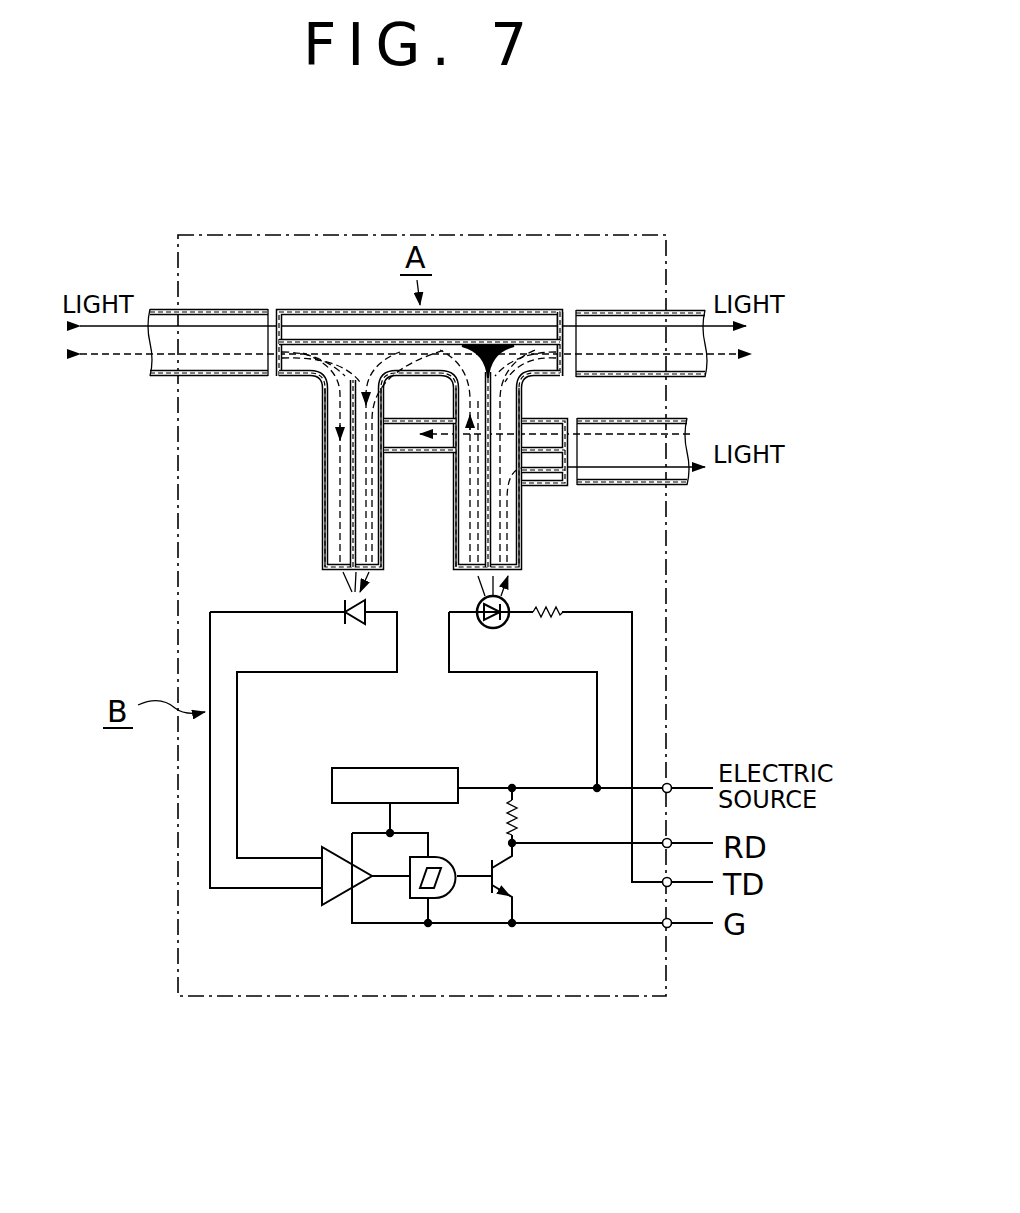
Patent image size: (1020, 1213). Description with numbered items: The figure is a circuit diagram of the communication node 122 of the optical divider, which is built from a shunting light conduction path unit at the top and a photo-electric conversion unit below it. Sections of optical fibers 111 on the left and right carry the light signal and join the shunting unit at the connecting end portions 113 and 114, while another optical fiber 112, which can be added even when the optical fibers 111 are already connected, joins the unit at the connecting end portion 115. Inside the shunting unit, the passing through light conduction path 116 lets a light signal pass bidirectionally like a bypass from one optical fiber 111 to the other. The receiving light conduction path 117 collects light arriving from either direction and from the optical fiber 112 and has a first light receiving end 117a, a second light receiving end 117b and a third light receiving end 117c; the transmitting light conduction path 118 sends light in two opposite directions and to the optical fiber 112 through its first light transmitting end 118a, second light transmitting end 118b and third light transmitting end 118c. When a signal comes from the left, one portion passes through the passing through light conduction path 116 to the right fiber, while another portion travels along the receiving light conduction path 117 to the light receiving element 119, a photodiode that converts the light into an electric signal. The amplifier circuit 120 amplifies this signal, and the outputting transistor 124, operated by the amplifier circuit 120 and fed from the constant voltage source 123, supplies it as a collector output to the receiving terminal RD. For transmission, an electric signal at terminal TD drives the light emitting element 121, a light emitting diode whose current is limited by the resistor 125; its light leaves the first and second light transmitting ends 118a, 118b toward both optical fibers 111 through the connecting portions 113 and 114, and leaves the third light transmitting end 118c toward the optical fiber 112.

The optical fiber 111 is at (160, 308).
The additionally connectable optical fiber 112 is at (690, 418).
The connecting end portion 113 is at (273, 308).
The connecting end portion 114 is at (566, 310).
The connecting end portion 115 is at (583, 478).
The passing through light conduction path 116 is at (317, 308).
The receiving light conduction path 117 is at (257, 450).
The first light receiving end 117a is at (322, 472).
The second light receiving end 117b is at (350, 502).
The third light receiving end 117c is at (350, 548).
The transmitting light conduction path 118 is at (602, 515).
The first light transmitting end 118a is at (493, 512).
The second light transmitting end 118b is at (510, 545).
The third light transmitting end 118c is at (520, 562).
The light receiving element 119 is at (357, 622).
The amplifier circuit 120 is at (333, 907).
The light emitting element 121 is at (478, 603).
The communication node 122 is at (553, 998).
The constant voltage source 123 is at (352, 768).
The outputting transistor 124 is at (505, 875).
The resistor 125 is at (553, 618).